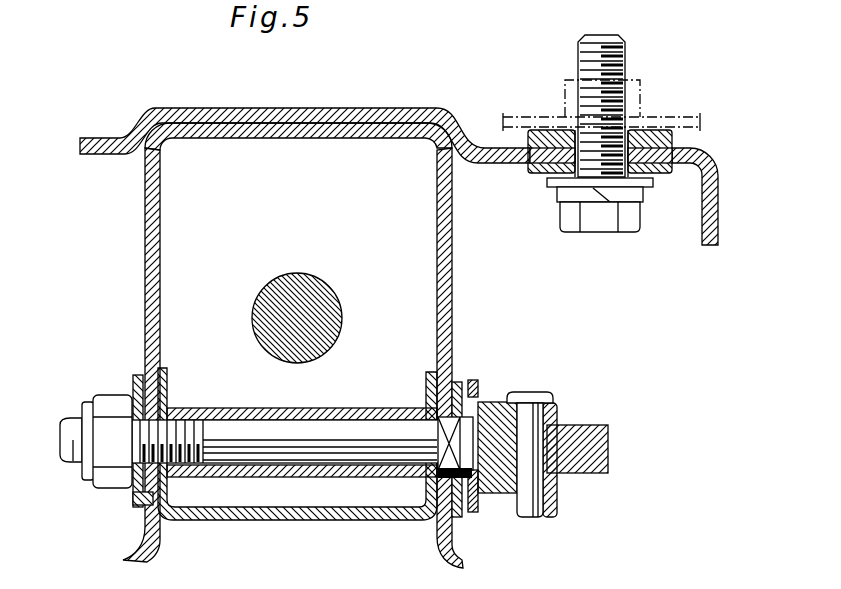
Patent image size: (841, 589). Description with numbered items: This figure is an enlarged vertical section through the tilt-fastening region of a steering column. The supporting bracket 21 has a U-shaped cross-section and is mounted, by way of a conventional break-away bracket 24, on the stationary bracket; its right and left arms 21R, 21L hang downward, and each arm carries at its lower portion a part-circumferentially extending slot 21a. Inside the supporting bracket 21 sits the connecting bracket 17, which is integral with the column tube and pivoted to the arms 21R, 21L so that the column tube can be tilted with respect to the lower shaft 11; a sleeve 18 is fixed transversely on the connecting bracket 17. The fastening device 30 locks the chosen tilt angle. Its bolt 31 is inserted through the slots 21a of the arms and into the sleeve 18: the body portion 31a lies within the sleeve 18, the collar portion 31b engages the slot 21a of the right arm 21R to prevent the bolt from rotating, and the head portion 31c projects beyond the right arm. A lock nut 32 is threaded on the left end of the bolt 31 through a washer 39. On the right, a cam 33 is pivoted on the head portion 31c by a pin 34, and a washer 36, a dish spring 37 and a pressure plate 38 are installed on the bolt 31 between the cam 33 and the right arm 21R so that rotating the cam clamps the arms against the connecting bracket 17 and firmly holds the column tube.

The lower shaft 11 is at (322, 304).
The connecting bracket 17 is at (279, 514).
The sleeve 18 is at (229, 408).
The supporting bracket 21 is at (260, 132).
The left arm 21L is at (162, 284).
The right arm 21R is at (453, 300).
The slot 21a is at (137, 494).
The break-away bracket 24 is at (448, 120).
The fastening device 30 is at (551, 528).
The bolt 31 is at (71, 420).
The body portion 31a is at (277, 428).
The collar portion 31b is at (440, 440).
The head portion 31c is at (500, 480).
The lock nut 32 is at (110, 401).
The cam 33 is at (555, 410).
The pin 34 is at (528, 394).
The washer 36 is at (455, 384).
The dish spring 37 is at (467, 490).
The pressure plate 38 is at (478, 395).
The washer 39 is at (138, 377).